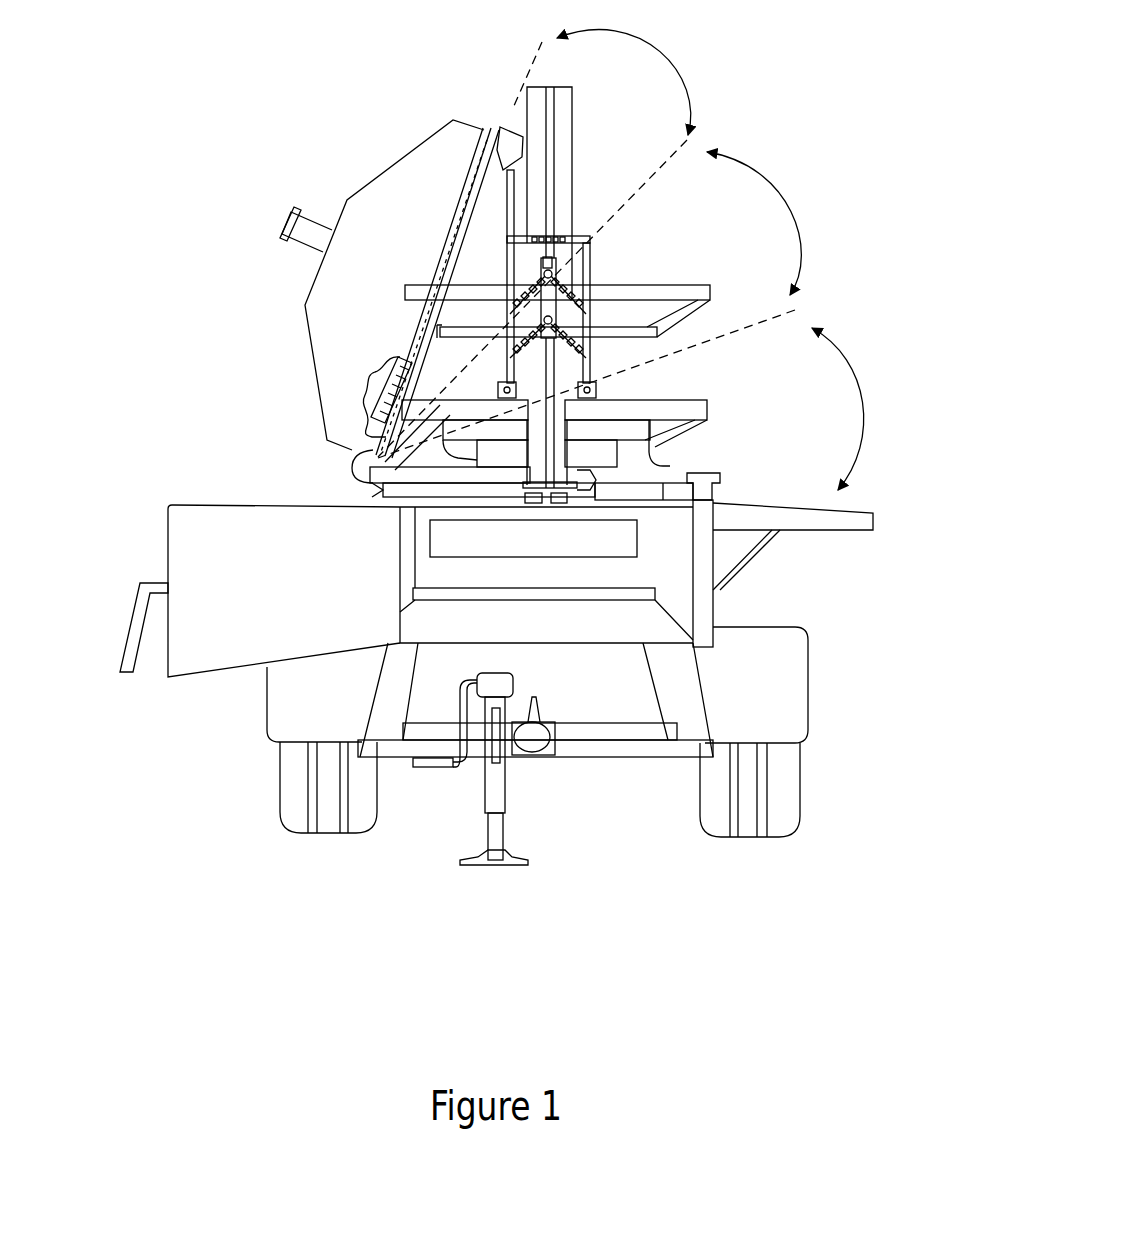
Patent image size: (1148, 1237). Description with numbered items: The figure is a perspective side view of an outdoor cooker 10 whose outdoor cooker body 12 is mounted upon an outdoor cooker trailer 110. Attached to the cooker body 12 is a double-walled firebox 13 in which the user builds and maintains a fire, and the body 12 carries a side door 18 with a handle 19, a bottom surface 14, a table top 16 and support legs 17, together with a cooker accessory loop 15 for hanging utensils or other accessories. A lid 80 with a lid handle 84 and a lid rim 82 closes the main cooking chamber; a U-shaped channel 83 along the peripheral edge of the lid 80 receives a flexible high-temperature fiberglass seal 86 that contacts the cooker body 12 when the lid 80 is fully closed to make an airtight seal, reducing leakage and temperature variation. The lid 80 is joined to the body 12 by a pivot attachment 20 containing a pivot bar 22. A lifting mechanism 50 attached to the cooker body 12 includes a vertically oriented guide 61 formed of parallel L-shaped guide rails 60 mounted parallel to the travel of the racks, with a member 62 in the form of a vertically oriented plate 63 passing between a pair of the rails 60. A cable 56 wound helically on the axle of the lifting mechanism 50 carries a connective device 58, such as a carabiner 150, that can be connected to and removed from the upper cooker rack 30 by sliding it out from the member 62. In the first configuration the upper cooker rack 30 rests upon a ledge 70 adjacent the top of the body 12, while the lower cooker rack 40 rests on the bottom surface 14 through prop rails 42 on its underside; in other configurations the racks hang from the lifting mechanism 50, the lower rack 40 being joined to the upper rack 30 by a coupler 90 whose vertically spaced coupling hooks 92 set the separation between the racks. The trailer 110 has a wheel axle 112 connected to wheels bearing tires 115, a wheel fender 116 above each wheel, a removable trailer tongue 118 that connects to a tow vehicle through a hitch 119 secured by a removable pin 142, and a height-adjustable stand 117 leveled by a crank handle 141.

The outdoor cooker 10 is at (815, 85).
The outdoor cooker body 12 is at (716, 604).
The double-walled firebox 13 is at (648, 748).
The bottom surface 14 is at (414, 622).
The cooker accessory loop 15 is at (580, 492).
The table top 16 is at (775, 505).
The support legs 17 is at (430, 660).
The side door 18 is at (168, 510).
The handle 19 is at (128, 625).
The pivot attachment 20 is at (348, 467).
The pivot bar 22 is at (358, 440).
The upper cooker rack 30 is at (712, 292).
The lower cooker rack 40 is at (710, 405).
The prop rails 42 is at (660, 462).
The lifting mechanism 50 is at (675, 60).
The cable 56 is at (552, 135).
The connective device 58 is at (568, 220).
The guide rails 60 is at (548, 180).
The vertically oriented guide 61 is at (604, 120).
The member 62 is at (553, 262).
The vertically oriented plate 63 is at (556, 281).
The ledge 70 is at (640, 496).
The lid 80 is at (393, 155).
The lid rim 82 is at (476, 126).
The U-shaped channel 83 is at (366, 380).
The lid handle 84 is at (510, 128).
The fiberglass seal 86 is at (393, 358).
The coupler 90 is at (590, 372).
The coupling hooks 92 is at (588, 315).
The outdoor cooker trailer 110 is at (193, 775).
The wheel axle 112 is at (598, 748).
The tire 115 is at (281, 826).
The wheel fender 116 is at (268, 722).
The stand 117 is at (487, 802).
The trailer tongue 118 is at (552, 716).
The hitch 119 is at (533, 752).
The crank handle 141 is at (438, 776).
The removable pin 142 is at (510, 700).
The carabiner 150 is at (590, 246).